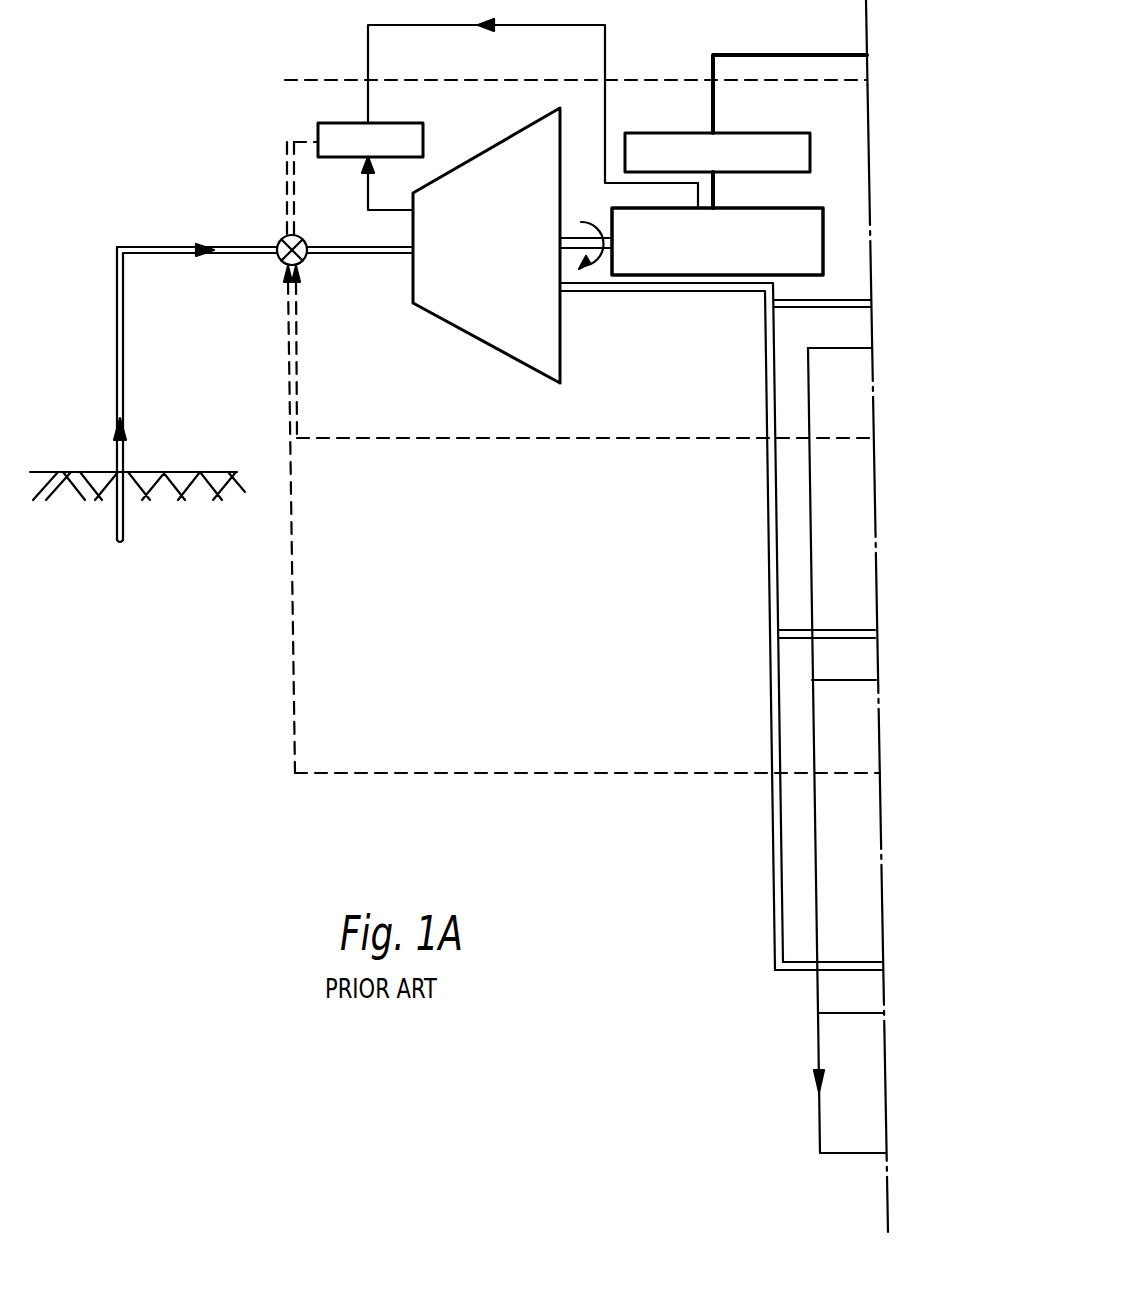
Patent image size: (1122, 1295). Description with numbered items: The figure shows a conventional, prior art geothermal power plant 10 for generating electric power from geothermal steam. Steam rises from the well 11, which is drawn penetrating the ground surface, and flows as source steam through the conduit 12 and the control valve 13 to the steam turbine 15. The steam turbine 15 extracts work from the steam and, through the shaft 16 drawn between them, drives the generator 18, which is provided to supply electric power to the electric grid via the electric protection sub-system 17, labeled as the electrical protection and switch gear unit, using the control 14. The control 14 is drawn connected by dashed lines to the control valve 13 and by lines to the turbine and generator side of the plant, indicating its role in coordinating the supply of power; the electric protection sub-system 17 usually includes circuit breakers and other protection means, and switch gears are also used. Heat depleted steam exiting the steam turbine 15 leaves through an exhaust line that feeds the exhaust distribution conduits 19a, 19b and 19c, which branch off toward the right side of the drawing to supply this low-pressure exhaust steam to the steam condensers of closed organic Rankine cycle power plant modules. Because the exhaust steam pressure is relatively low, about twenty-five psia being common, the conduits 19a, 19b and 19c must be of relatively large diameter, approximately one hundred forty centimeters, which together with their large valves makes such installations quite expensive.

The conventional geothermal power plant 10 is at (624, 50).
The well 11 is at (117, 516).
The conduit 12 is at (237, 257).
The control valve 13 is at (302, 239).
The control 14 is at (333, 122).
The steam turbine 15 is at (434, 172).
The turbine shaft 16 is at (566, 236).
The electric protection sub-system 17 is at (762, 133).
The generator 18 is at (808, 206).
The exhaust distribution conduit 19a is at (815, 300).
The exhaust distribution conduit 19b is at (850, 630).
The exhaust distribution conduit 19c is at (853, 962).